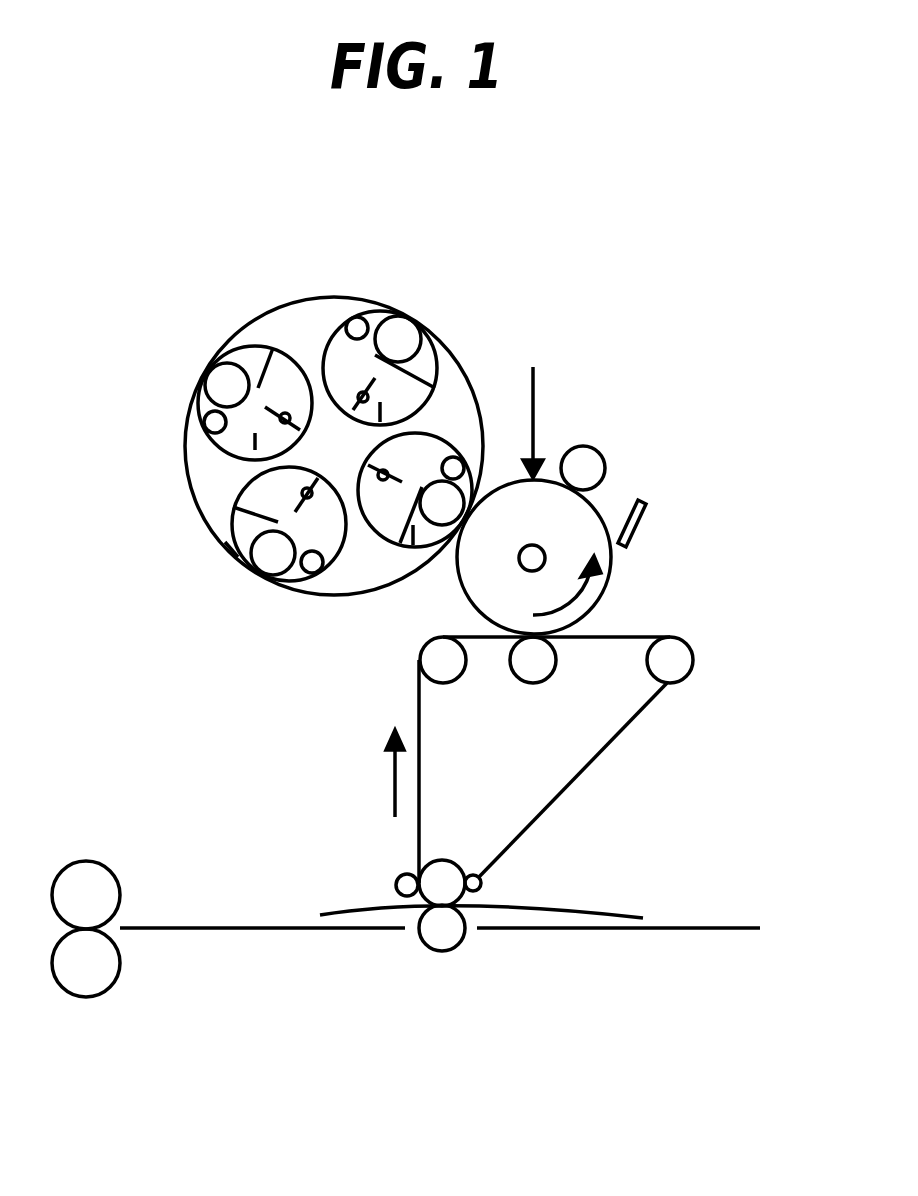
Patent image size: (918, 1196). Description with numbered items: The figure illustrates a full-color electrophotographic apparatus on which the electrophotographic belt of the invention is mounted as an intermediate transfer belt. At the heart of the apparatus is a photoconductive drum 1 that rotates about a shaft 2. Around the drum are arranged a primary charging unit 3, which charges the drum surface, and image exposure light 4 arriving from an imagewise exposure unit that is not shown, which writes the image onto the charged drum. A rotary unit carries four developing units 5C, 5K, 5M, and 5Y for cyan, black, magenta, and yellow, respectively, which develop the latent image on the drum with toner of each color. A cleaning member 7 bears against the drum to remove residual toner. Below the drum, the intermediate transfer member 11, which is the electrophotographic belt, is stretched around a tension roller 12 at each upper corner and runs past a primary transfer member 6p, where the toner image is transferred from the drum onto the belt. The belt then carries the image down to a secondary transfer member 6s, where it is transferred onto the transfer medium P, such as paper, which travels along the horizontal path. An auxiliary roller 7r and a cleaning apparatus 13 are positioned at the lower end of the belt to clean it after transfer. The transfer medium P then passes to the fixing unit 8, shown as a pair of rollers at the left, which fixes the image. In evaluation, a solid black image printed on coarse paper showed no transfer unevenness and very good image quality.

The photoconductive drum 1 is at (617, 563).
The shaft 2 is at (519, 558).
The primary charging unit 3 is at (580, 447).
The image exposure light 4 is at (533, 367).
The developing unit 5C is at (220, 358).
The developing unit 5M is at (402, 317).
The developing unit 5K is at (250, 590).
The developing unit 5Y is at (440, 565).
The transfer member 6p is at (525, 682).
The transfer member 6s is at (433, 953).
The cleaning member 7 is at (635, 507).
The auxiliary roller 7r is at (395, 883).
The fixing unit 8 is at (65, 865).
The intermediate transfer member 11 is at (420, 745).
The tension roller 12 is at (419, 657).
The cleaning apparatus 13 is at (485, 880).
The transfer medium P is at (590, 912).